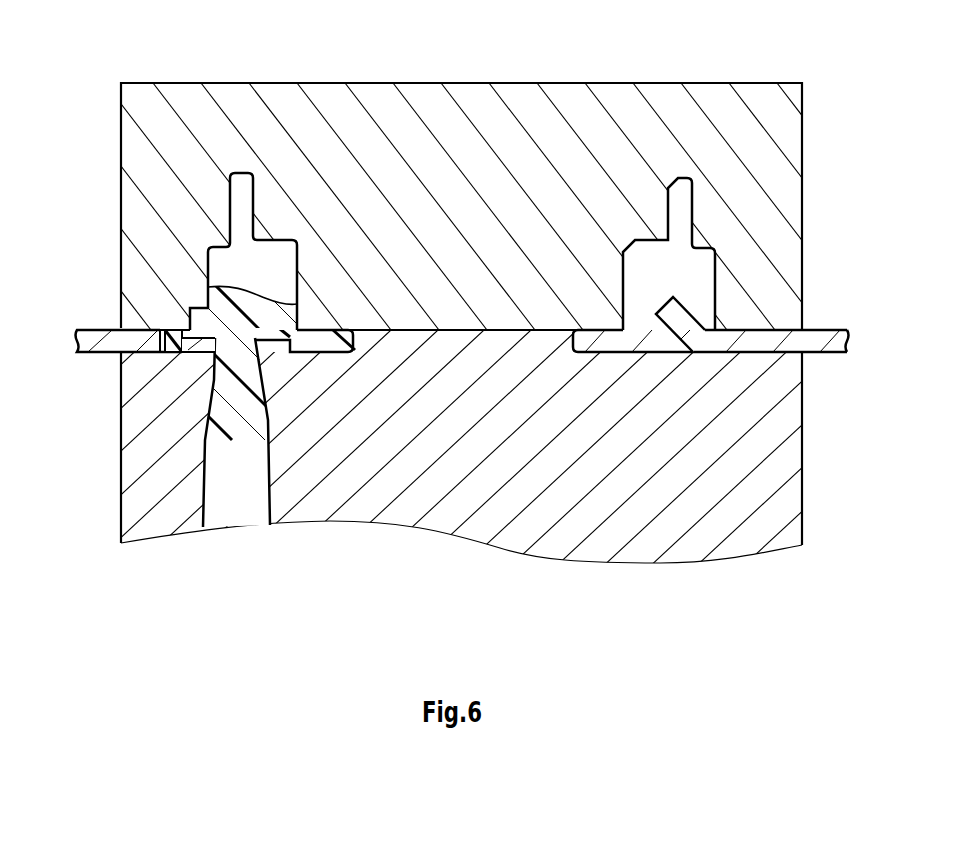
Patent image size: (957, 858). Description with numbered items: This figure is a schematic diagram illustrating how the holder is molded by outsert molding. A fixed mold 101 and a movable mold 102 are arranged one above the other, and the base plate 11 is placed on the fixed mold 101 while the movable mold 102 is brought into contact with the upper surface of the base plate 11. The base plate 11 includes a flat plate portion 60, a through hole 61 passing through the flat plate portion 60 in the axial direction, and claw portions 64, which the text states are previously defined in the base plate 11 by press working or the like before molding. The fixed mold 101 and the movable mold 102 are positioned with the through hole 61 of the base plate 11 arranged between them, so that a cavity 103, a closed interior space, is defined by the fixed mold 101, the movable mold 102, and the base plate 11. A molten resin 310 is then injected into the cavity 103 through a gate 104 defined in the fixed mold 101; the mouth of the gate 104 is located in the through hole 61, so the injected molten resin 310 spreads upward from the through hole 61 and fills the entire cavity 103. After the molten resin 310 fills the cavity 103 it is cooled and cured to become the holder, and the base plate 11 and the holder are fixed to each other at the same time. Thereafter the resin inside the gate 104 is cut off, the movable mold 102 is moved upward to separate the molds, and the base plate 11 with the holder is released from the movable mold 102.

The movable mold 102 is at (295, 118).
The fixed mold 101 is at (408, 512).
The flat plate portion 60 is at (90, 342).
The molten resin 310 is at (250, 313).
The gate 104 is at (237, 348).
The cavity 103 is at (665, 268).
The base plate 11 is at (828, 363).
The claw portion 64 is at (676, 312).
The through hole 61 is at (638, 345).